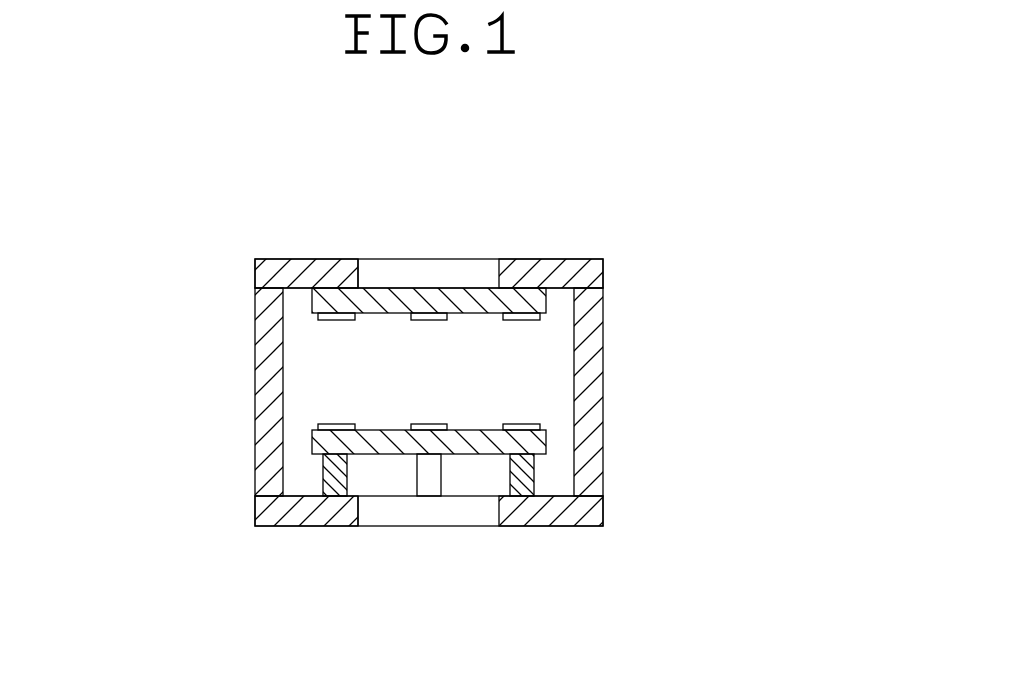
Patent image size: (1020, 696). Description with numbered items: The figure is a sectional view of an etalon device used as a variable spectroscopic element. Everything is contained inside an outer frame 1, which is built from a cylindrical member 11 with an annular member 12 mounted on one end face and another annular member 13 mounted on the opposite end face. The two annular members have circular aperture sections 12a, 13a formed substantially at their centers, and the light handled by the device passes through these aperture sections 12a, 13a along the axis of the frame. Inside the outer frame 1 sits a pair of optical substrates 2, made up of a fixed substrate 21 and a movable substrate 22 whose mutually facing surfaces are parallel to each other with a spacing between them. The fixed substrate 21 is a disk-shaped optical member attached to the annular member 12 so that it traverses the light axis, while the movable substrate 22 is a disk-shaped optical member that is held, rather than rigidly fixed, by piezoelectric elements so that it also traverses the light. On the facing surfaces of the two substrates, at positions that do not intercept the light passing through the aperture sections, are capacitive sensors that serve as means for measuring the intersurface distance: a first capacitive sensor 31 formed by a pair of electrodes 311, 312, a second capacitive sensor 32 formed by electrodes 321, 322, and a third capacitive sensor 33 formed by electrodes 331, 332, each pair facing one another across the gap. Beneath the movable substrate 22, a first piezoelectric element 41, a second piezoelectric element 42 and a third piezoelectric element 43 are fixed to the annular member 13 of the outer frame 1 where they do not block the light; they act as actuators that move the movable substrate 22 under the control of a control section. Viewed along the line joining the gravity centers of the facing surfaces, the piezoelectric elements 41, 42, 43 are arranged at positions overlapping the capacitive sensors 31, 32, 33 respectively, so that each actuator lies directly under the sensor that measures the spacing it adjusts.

The outer frame 1 is at (170, 330).
The cylindrical member 11 is at (258, 350).
The annular member 12 is at (257, 270).
The annular member 13 is at (262, 518).
The aperture section 12a is at (371, 262).
The aperture section 13a is at (360, 511).
The pair of optical substrates 2 is at (477, 146).
The fixed substrate 21 is at (449, 306).
The movable substrate 22 is at (392, 438).
The first capacitive sensor 31 is at (270, 120).
The electrode 311 is at (337, 423).
The electrode 312 is at (342, 320).
The second capacitive sensor 32 is at (590, 120).
The electrode 321 is at (438, 321).
The electrode 322 is at (440, 424).
The third capacitive sensor 33 is at (690, 345).
The electrode 331 is at (520, 320).
The electrode 332 is at (520, 424).
The first piezoelectric element 41 is at (347, 472).
The second piezoelectric element 42 is at (435, 485).
The third piezoelectric element 43 is at (515, 472).